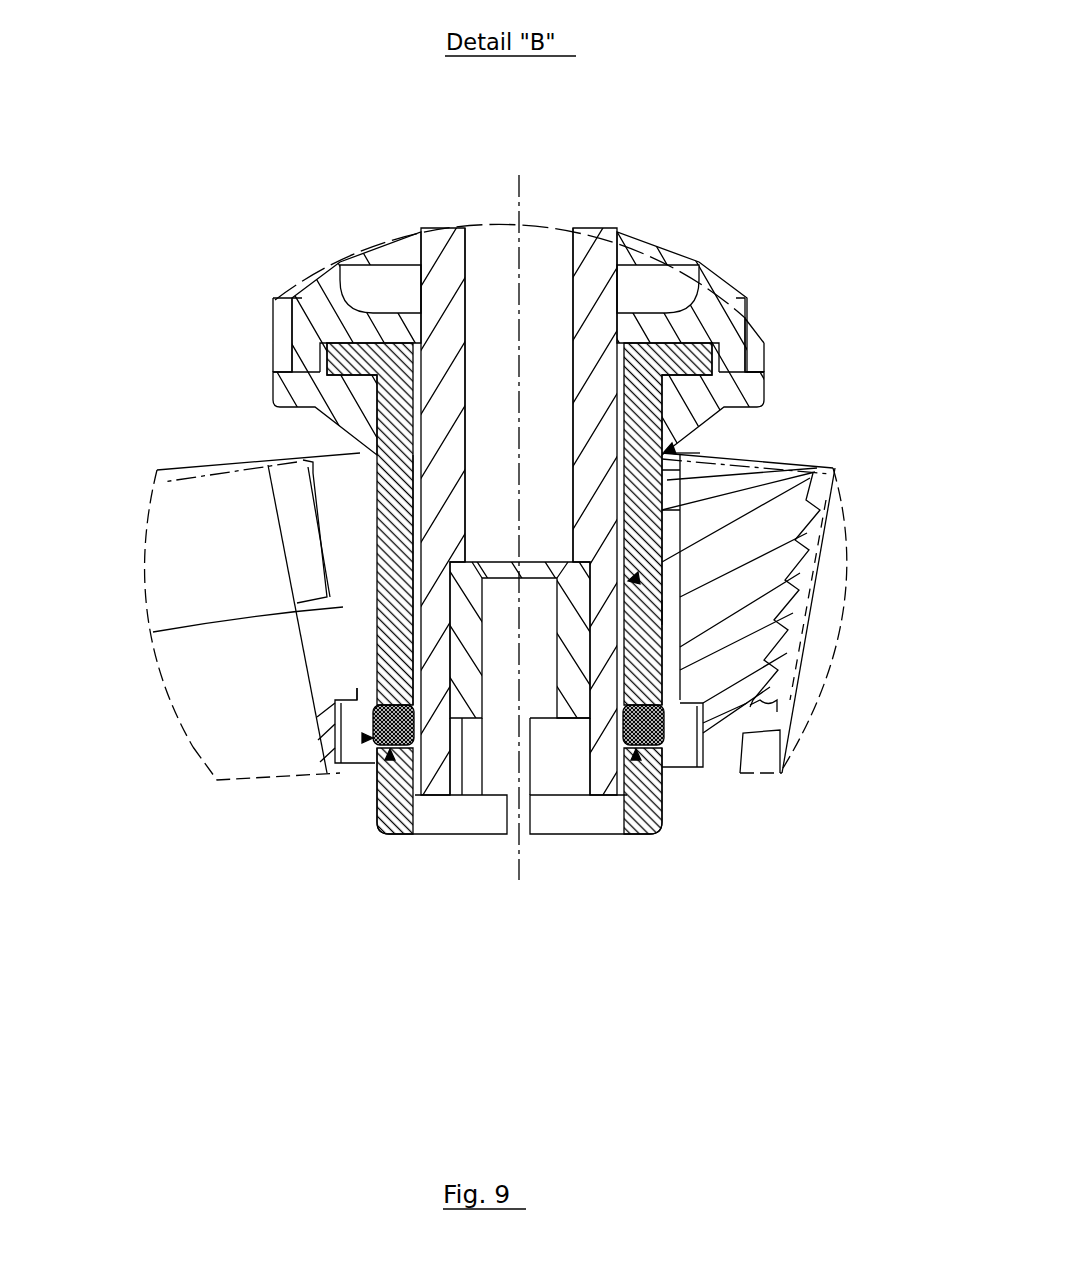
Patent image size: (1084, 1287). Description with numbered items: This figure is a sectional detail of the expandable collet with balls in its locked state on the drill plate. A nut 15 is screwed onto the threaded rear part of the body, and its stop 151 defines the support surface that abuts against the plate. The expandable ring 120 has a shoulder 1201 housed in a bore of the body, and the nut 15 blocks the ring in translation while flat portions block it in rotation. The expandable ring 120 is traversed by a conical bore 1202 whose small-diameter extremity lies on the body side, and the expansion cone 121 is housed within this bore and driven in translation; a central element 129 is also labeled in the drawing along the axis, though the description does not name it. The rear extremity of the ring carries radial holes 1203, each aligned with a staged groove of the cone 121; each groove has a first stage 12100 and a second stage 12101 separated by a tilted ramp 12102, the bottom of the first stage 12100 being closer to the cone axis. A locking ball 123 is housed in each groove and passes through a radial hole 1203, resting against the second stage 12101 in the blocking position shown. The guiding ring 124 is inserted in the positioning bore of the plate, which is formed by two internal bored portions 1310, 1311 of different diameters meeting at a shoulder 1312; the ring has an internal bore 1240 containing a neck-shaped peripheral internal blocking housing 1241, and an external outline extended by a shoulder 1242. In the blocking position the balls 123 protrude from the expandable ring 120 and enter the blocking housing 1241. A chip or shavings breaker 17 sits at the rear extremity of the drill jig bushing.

The nut 15 is at (287, 297).
The rod 129 is at (592, 275).
The shoulder 1201 is at (695, 340).
The stop 151 is at (760, 320).
The expandable ring 120 is at (678, 446).
The expansion cone 121 is at (598, 510).
The conical bore 1202 is at (634, 578).
The guiding ring 124 is at (650, 614).
The second stage 12101 is at (655, 690).
The radial holes 1203 is at (378, 687).
The shoulder 1312 is at (703, 725).
The shoulder 1242 is at (684, 724).
The internal bored portion 1310 is at (390, 594).
The first stage 12100 is at (372, 623).
The internal bore 1240 is at (365, 660).
The peripheral internal blocking housing 1241 is at (364, 740).
The tilted ramp 12102 is at (450, 692).
The chip or shavings breaker 17 is at (573, 692).
The locking balls 123 is at (389, 756).
The internal bored portion 1311 is at (345, 718).